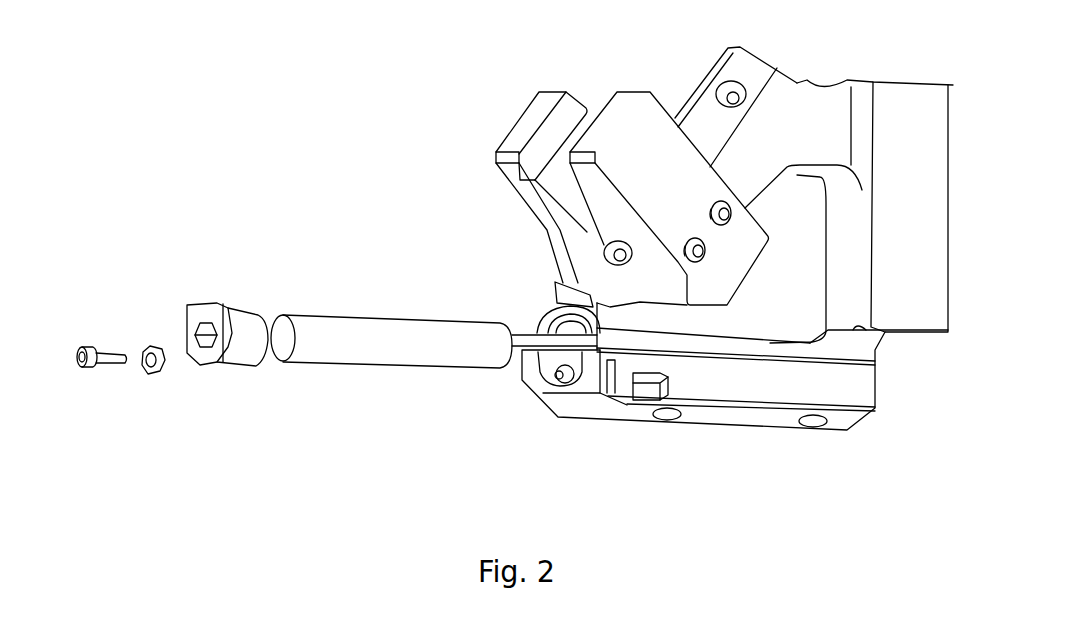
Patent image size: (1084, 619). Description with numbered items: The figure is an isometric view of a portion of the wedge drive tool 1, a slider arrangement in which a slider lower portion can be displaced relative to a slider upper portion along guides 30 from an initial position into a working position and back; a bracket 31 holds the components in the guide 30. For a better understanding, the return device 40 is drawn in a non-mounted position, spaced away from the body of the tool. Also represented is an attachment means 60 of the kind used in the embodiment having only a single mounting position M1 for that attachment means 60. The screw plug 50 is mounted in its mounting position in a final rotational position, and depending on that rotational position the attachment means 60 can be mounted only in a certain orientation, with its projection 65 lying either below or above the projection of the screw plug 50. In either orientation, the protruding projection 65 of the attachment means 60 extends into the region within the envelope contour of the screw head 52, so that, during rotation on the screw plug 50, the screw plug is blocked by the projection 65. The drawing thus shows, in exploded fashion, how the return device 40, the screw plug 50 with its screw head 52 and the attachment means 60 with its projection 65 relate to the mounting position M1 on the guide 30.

The wedge drive tool 1 is at (463, 75).
The guide 30 is at (702, 118).
The bracket 31 is at (520, 164).
The return device 40 is at (388, 352).
The screw plug 50 is at (245, 318).
The screw head 52 is at (193, 308).
The attachment means 60 is at (143, 370).
The projection 65 is at (160, 348).
The mounting position M1 is at (536, 383).